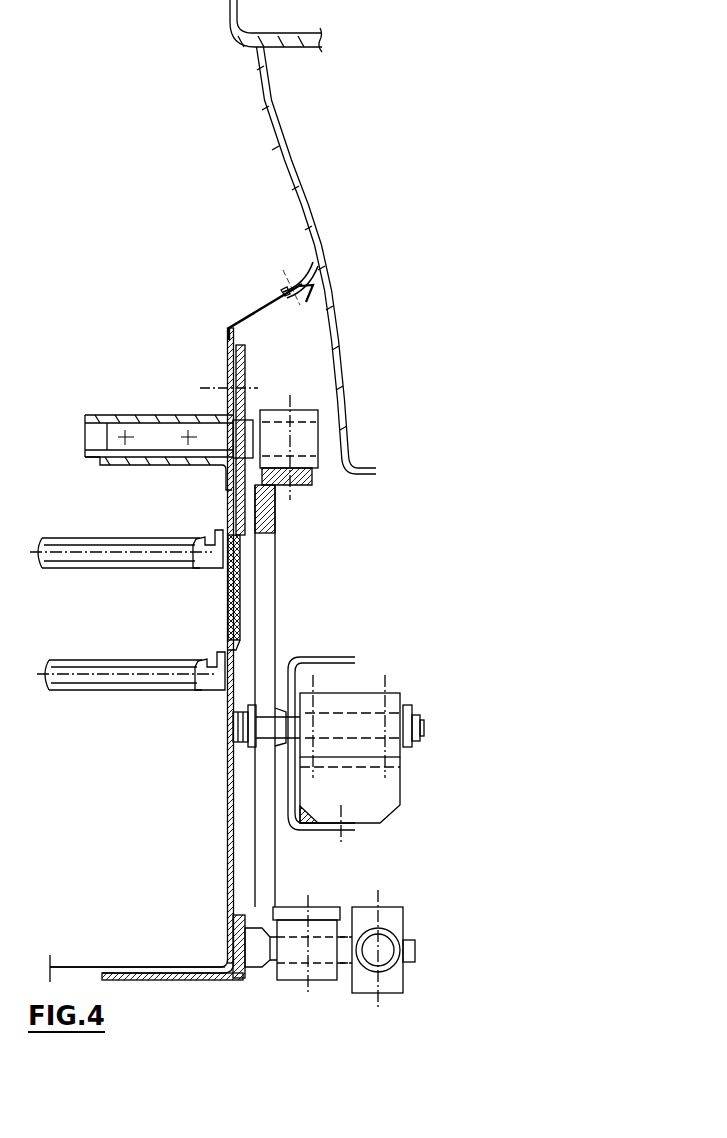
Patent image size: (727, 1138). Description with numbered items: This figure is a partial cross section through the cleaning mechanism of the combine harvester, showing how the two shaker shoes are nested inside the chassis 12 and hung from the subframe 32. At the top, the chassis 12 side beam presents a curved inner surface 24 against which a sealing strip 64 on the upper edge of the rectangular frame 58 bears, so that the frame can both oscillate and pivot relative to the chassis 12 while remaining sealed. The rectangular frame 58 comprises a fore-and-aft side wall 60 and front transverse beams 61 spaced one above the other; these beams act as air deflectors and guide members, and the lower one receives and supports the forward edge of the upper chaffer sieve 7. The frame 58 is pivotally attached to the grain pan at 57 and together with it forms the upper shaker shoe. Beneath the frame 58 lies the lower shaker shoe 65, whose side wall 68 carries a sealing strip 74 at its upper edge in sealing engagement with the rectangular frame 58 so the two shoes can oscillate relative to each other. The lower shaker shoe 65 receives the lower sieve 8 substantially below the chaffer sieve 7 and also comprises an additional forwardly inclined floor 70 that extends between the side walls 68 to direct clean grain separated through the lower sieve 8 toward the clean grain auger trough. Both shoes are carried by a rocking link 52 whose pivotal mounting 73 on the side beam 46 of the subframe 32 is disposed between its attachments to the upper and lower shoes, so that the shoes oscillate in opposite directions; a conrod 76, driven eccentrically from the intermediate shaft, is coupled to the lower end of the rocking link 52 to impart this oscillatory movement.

The upper chaffer sieve 7 is at (112, 535).
The lower sieve 8 is at (85, 660).
The combine harvester chassis 12 is at (343, 392).
The curved inner surfaces 24 is at (303, 192).
The subframe 32 is at (358, 656).
The side beams 46 is at (320, 657).
The rocking links 52 is at (277, 544).
The pivotal attachment 57 is at (318, 462).
The rectangular frame 58 is at (246, 376).
The side walls 60 is at (228, 361).
The front transverse beams 61 is at (97, 413).
The sealing strips 64 is at (311, 262).
The lower shaker shoe 65 is at (158, 979).
The side walls 68 is at (232, 798).
The additional forwardly inclined floor 70 is at (91, 972).
The pivotal mounting 73 is at (378, 713).
The sealing strips 74 is at (241, 582).
The conrods 76 is at (388, 927).